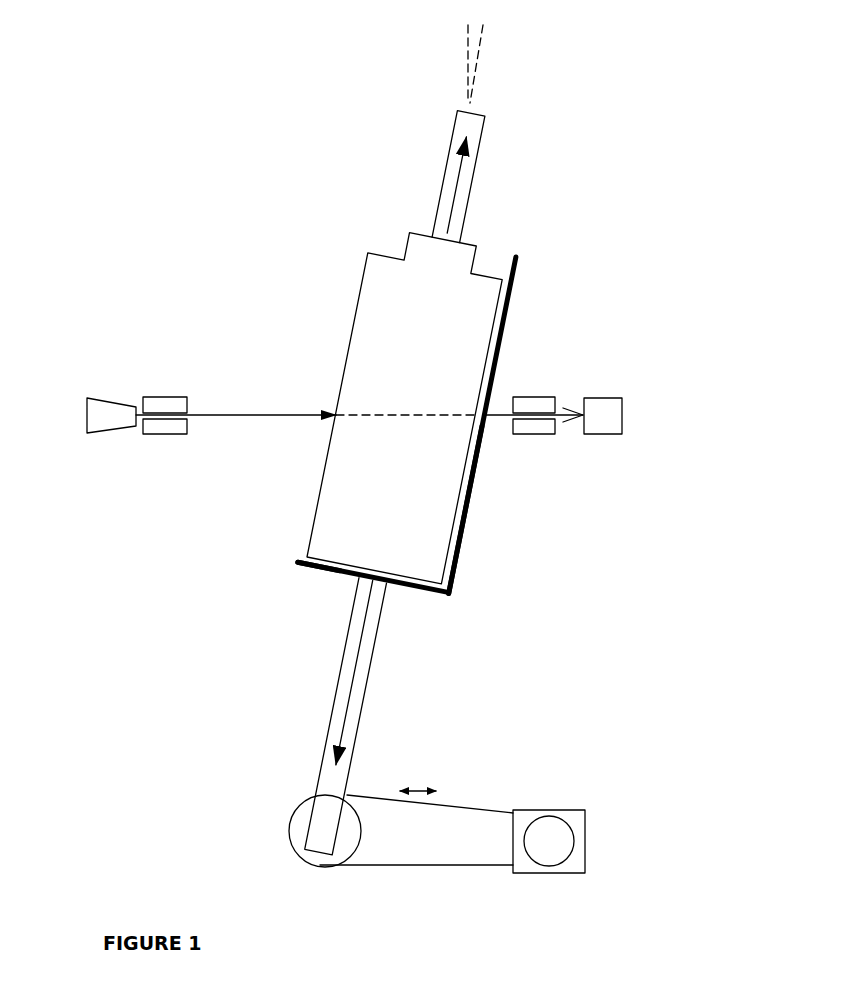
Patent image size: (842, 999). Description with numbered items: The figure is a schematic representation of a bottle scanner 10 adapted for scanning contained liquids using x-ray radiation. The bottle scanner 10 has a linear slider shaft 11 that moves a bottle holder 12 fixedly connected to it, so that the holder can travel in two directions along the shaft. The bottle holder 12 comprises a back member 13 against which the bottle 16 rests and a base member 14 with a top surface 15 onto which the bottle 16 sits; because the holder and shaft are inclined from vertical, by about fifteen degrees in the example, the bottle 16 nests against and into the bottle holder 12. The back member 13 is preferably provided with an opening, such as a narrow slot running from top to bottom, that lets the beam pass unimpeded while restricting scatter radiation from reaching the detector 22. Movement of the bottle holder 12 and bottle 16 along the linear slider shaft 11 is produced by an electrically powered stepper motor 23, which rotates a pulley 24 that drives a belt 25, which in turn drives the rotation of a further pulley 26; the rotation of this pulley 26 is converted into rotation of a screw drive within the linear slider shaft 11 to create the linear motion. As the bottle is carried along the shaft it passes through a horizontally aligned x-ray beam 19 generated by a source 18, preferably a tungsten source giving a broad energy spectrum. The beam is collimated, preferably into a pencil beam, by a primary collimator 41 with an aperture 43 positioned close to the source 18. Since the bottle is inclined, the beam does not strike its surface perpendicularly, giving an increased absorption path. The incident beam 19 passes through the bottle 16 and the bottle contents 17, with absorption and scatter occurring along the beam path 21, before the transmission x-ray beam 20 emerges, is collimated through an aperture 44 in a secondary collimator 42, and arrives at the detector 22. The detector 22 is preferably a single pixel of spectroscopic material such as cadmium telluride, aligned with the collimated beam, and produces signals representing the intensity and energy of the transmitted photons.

The bottle scanner 10 is at (322, 162).
The linear slider shaft 11 is at (330, 697).
The bottle holder 12 is at (499, 270).
The back member 13 is at (463, 520).
The base member 14 is at (303, 567).
The top surface 15 is at (326, 562).
The bottle 16 is at (360, 283).
The bottle contents 17 is at (360, 490).
The source 18 is at (102, 408).
The x-ray beam 19 is at (238, 414).
The transmission x-ray beam 20 is at (493, 422).
The beam path 21 is at (360, 413).
The detector 22 is at (615, 403).
The stepper motor 23 is at (580, 822).
The pulley 24 is at (553, 830).
The belt 25 is at (490, 808).
The pulley 26 is at (295, 833).
The primary collimator 41 is at (157, 400).
The secondary collimator 42 is at (545, 400).
The aperture 43 is at (192, 422).
The aperture 44 is at (500, 410).